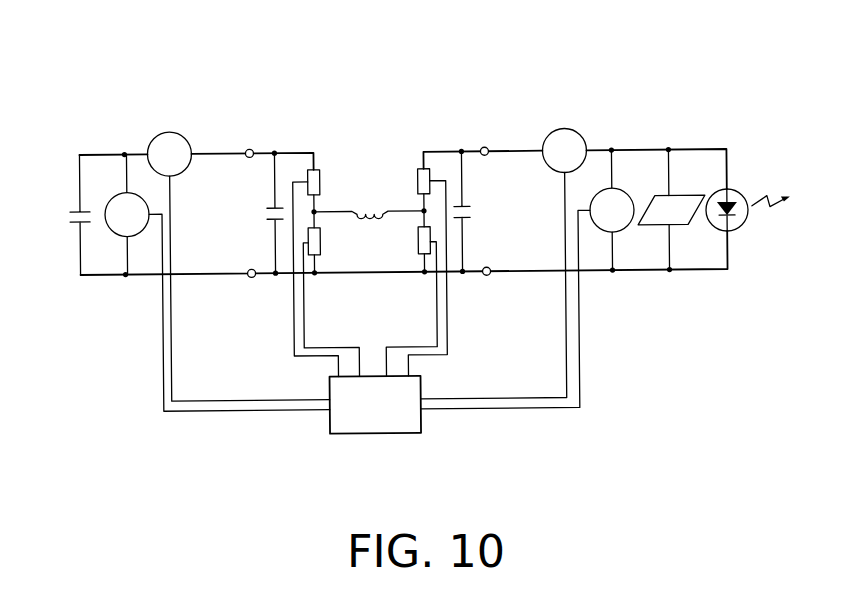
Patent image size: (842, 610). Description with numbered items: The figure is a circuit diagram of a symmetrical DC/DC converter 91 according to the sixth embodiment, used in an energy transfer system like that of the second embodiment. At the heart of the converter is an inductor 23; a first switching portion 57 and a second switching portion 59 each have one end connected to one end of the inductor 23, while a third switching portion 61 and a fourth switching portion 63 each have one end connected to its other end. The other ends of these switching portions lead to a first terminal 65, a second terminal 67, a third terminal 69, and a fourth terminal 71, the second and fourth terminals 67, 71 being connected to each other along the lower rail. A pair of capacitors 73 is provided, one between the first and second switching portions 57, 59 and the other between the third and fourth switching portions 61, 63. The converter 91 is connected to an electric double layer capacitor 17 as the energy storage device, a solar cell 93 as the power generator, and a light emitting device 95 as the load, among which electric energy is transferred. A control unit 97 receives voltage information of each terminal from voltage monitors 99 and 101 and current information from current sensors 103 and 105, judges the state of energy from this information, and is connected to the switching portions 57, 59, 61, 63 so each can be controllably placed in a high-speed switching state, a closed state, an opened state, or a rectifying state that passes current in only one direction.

The electric double layer capacitor 17 is at (79, 284).
The inductor 23 is at (368, 203).
The first switching portion 57 is at (321, 176).
The second switching portion 59 is at (322, 247).
The third switching portion 61 is at (418, 176).
The fourth switching portion 63 is at (417, 247).
The first terminal 65 is at (250, 146).
The second terminal 67 is at (252, 278).
The third terminal 69 is at (485, 146).
The fourth terminal 71 is at (486, 278).
The capacitor 73 is at (261, 211).
The symmetrical DC/DC converter 91 is at (380, 114).
The solar cell 93 is at (665, 278).
The light emitting device 95 is at (725, 278).
The control unit 97 is at (374, 436).
The voltage monitor 99 is at (110, 196).
The voltage monitor 101 is at (622, 190).
The current sensor 103 is at (170, 128).
The current sensor 105 is at (565, 128).